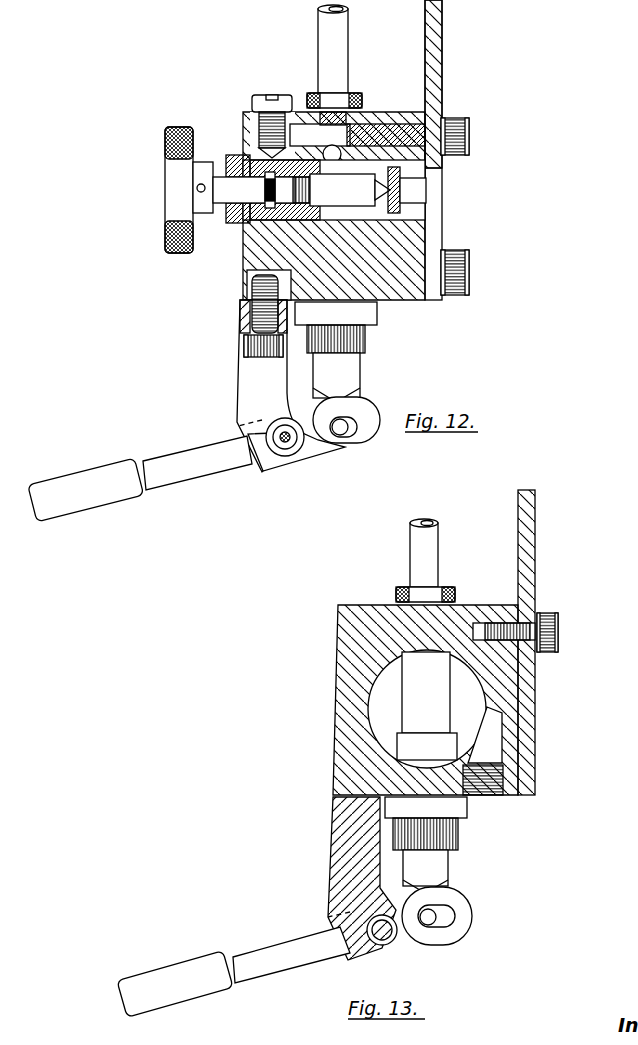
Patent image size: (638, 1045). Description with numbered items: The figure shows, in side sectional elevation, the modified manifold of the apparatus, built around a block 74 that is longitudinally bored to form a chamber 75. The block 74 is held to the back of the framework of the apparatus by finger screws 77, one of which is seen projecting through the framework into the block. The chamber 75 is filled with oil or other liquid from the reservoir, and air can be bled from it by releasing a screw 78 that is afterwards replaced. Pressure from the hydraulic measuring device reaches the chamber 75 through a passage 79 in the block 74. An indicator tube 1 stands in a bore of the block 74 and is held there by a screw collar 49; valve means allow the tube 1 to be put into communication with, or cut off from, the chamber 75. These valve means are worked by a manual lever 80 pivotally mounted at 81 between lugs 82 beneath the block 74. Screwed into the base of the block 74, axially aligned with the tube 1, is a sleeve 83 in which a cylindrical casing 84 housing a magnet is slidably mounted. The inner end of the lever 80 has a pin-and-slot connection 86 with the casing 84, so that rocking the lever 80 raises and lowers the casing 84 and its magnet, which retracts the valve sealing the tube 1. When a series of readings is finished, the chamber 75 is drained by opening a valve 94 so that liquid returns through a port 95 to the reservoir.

In FIG. 12, the indicator tube 1 is at (318, 40).
In FIG. 13, the indicator tube 1 is at (410, 546).
In FIG. 12, the screw collar 49 is at (352, 108).
In FIG. 13, the screw collar 49 is at (396, 597).
In FIG. 12, the block 74 is at (418, 226).
In FIG. 13, the block 74 is at (338, 688).
In FIG. 13, the chamber 75 is at (463, 716).
In FIG. 13, the finger screw 77 is at (546, 618).
In FIG. 12, the screw 78 is at (257, 96).
In FIG. 13, the passage 79 is at (487, 738).
In FIG. 12, the manual lever 80 is at (210, 454).
In FIG. 13, the manual lever 80 is at (285, 951).
In FIG. 12, the pivot 81 is at (295, 452).
In FIG. 13, the pivot 81 is at (384, 948).
In FIG. 12, the lug 82 is at (247, 393).
In FIG. 13, the lug 82 is at (330, 890).
In FIG. 12, the sleeve 83 is at (350, 343).
In FIG. 13, the sleeve 83 is at (447, 838).
In FIG. 12, the cylindrical casing 84 is at (340, 376).
In FIG. 13, the cylindrical casing 84 is at (430, 870).
In FIG. 12, the pin-and-slot connection 86 is at (340, 430).
In FIG. 13, the pin-and-slot connection 86 is at (430, 925).
In FIG. 12, the valve 94 is at (176, 128).
In FIG. 12, the port 95 is at (412, 190).